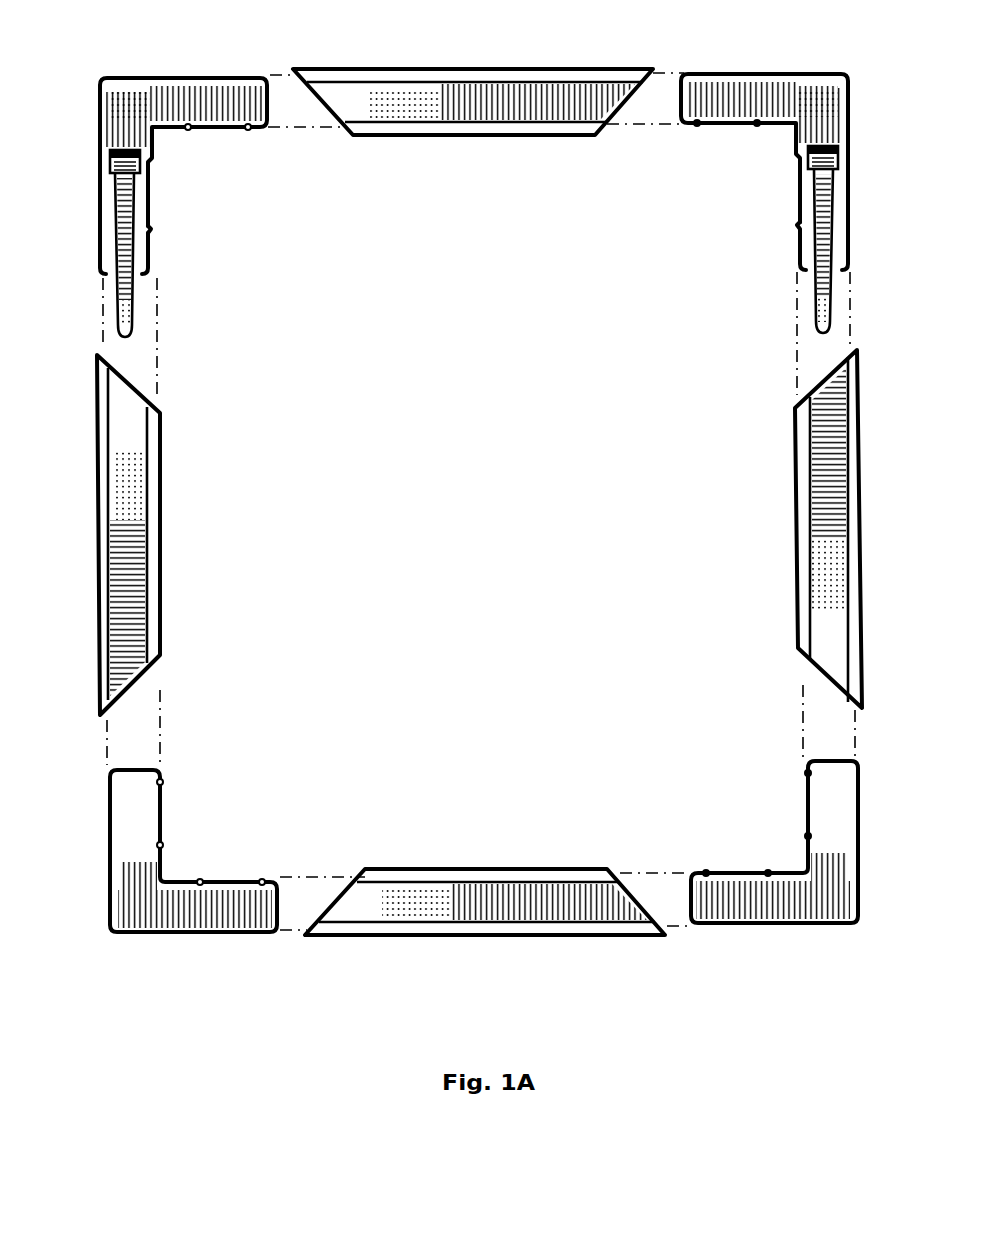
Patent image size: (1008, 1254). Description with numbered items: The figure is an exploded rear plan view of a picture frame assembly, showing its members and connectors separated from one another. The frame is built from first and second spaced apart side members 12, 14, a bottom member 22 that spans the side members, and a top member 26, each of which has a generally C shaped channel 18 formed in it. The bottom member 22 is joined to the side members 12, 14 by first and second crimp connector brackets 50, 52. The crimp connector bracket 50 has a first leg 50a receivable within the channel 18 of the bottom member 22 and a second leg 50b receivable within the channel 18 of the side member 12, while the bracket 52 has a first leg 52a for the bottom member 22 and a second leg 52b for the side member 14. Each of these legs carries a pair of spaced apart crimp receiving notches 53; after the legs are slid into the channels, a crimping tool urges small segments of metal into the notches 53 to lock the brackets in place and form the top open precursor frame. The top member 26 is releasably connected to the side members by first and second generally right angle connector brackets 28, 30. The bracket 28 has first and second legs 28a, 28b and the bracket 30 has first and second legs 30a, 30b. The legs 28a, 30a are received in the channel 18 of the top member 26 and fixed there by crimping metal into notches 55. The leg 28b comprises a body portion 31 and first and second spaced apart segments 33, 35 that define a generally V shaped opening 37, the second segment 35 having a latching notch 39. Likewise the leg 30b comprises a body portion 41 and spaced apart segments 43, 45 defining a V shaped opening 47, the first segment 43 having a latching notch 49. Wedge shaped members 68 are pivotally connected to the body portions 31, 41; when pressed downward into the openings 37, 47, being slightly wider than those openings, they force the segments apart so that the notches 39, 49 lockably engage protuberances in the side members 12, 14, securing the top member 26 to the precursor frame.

The first side member 12 is at (97, 547).
The second side member 14 is at (862, 537).
The C shaped channel 18 is at (345, 97).
The bottom member 22 is at (528, 935).
The top member 26 is at (455, 68).
The first connector bracket 28 is at (120, 92).
The first leg 28a is at (188, 93).
The second leg 28b is at (105, 190).
The second connector bracket 30 is at (805, 74).
The first leg 30a is at (777, 88).
The second leg 30b is at (838, 178).
The body portion 31 is at (125, 117).
The first segment 33 is at (98, 245).
The second segment 35 is at (153, 250).
The V shaped opening 37 is at (132, 268).
The latching notch 39 is at (150, 230).
The body portion 41 is at (823, 117).
The first segment 43 is at (803, 190).
The second segment 45 is at (838, 188).
The V shaped opening 47 is at (827, 238).
The latching notch 49 is at (795, 225).
The first crimp connector bracket 50 is at (110, 833).
The first leg 50a is at (203, 915).
The second leg 50b is at (140, 818).
The second crimp connector bracket 52 is at (860, 853).
The first leg 52a is at (707, 920).
The second leg 52b is at (842, 795).
The crimp receiving notches 53 is at (163, 782).
The notches 55 is at (190, 130).
The wedge shaped members 68 is at (500, 244).